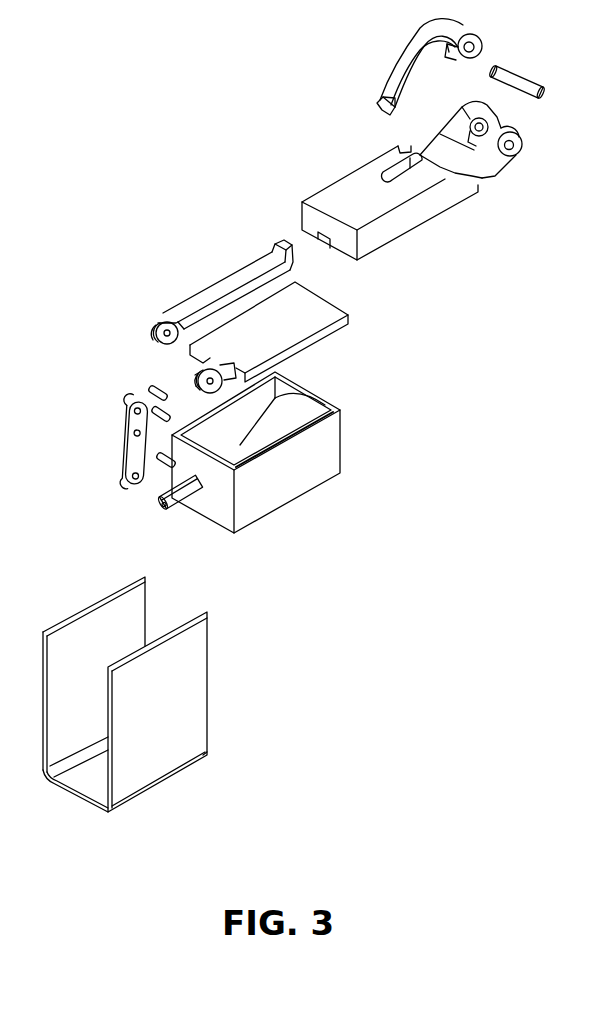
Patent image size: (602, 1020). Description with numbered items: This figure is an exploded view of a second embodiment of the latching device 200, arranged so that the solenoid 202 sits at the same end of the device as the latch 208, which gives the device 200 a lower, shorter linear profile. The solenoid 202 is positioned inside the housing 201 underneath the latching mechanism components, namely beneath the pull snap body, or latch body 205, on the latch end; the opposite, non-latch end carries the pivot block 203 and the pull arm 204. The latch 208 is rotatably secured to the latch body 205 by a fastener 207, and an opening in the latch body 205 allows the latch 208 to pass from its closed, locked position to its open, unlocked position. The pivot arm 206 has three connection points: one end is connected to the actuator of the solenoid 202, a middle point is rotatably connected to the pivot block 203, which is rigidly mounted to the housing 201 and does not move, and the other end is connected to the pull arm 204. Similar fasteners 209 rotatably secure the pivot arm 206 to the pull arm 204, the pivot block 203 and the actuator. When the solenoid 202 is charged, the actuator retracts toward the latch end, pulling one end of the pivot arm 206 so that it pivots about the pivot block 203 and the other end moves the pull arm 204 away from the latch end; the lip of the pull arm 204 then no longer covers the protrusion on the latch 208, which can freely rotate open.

The device 200 is at (113, 194).
The housing 201 is at (183, 697).
The solenoid 202 is at (278, 483).
The pivot block 203 is at (322, 338).
The pull arm 204 is at (230, 281).
The latch body 205 is at (408, 218).
The pivot arm 206 is at (138, 452).
The fastener 207 is at (523, 72).
The latch 208 is at (405, 47).
The fasteners 209 is at (148, 388).